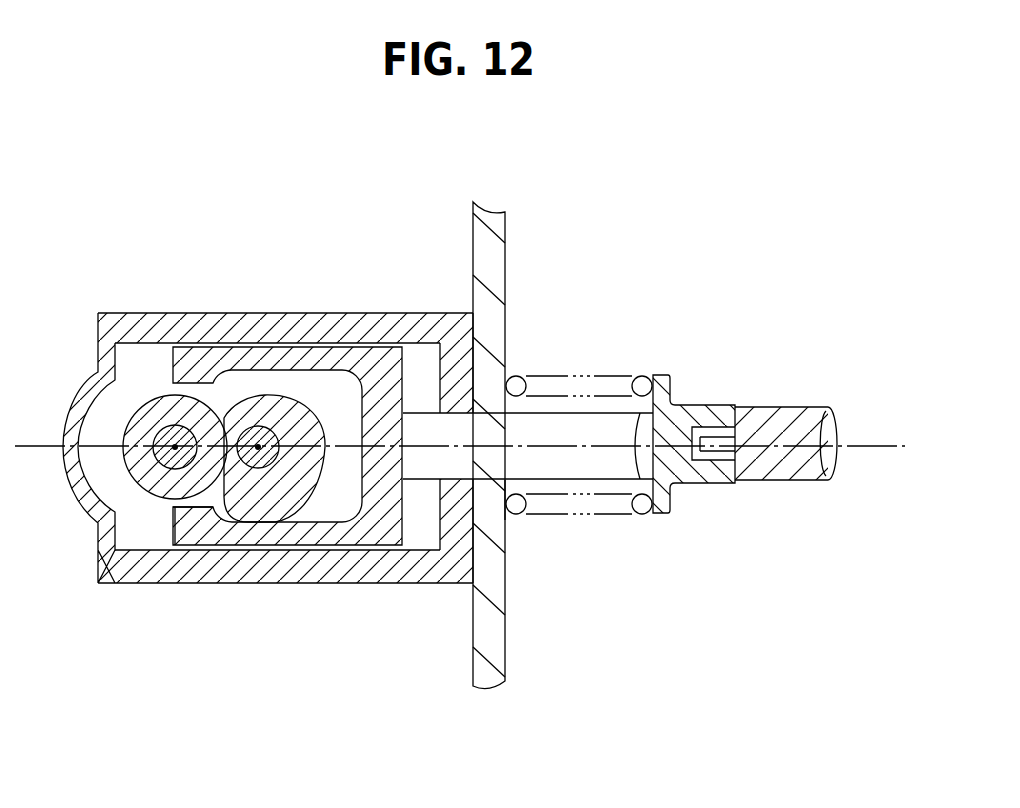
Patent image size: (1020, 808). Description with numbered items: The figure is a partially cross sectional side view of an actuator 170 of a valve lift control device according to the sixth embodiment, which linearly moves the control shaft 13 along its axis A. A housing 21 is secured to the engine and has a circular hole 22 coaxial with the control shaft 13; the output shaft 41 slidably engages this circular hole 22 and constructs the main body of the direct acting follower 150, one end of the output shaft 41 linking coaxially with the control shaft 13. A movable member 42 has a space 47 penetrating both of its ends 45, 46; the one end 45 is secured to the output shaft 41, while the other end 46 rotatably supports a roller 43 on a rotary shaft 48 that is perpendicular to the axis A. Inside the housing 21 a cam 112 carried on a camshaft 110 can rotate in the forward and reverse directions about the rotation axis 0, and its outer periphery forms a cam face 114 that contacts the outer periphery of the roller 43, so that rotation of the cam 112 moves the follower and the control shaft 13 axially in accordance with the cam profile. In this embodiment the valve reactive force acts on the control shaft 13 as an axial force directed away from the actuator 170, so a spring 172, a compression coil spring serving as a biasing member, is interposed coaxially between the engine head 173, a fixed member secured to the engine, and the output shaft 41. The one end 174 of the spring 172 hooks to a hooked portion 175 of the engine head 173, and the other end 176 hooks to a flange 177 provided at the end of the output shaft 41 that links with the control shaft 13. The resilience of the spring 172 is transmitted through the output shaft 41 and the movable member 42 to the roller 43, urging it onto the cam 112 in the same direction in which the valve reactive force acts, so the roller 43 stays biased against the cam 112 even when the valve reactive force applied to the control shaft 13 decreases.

The control shaft 13 is at (815, 423).
The housing 21 is at (127, 583).
The circular hole 22 is at (449, 490).
The output shaft 41 is at (567, 425).
The movable member 42 is at (303, 355).
The roller 43 is at (165, 415).
The one end of the movable member 45 is at (388, 484).
The other end of the movable member 46 is at (183, 513).
The space 47 is at (322, 513).
The rotary shaft 48 is at (172, 448).
The rotation axis 0 is at (258, 440).
The camshaft 110 is at (283, 470).
The cam 112 is at (272, 397).
The cam face 114 is at (245, 425).
The direct acting follower 150 is at (415, 357).
The actuator 170 is at (384, 592).
The spring 172 is at (612, 514).
The engine head 173 is at (496, 228).
The one end of the spring 174 is at (515, 514).
The hooked portion 175 is at (507, 515).
The other end of the spring 176 is at (645, 376).
The flange 177 is at (663, 375).
The axis A is at (868, 446).